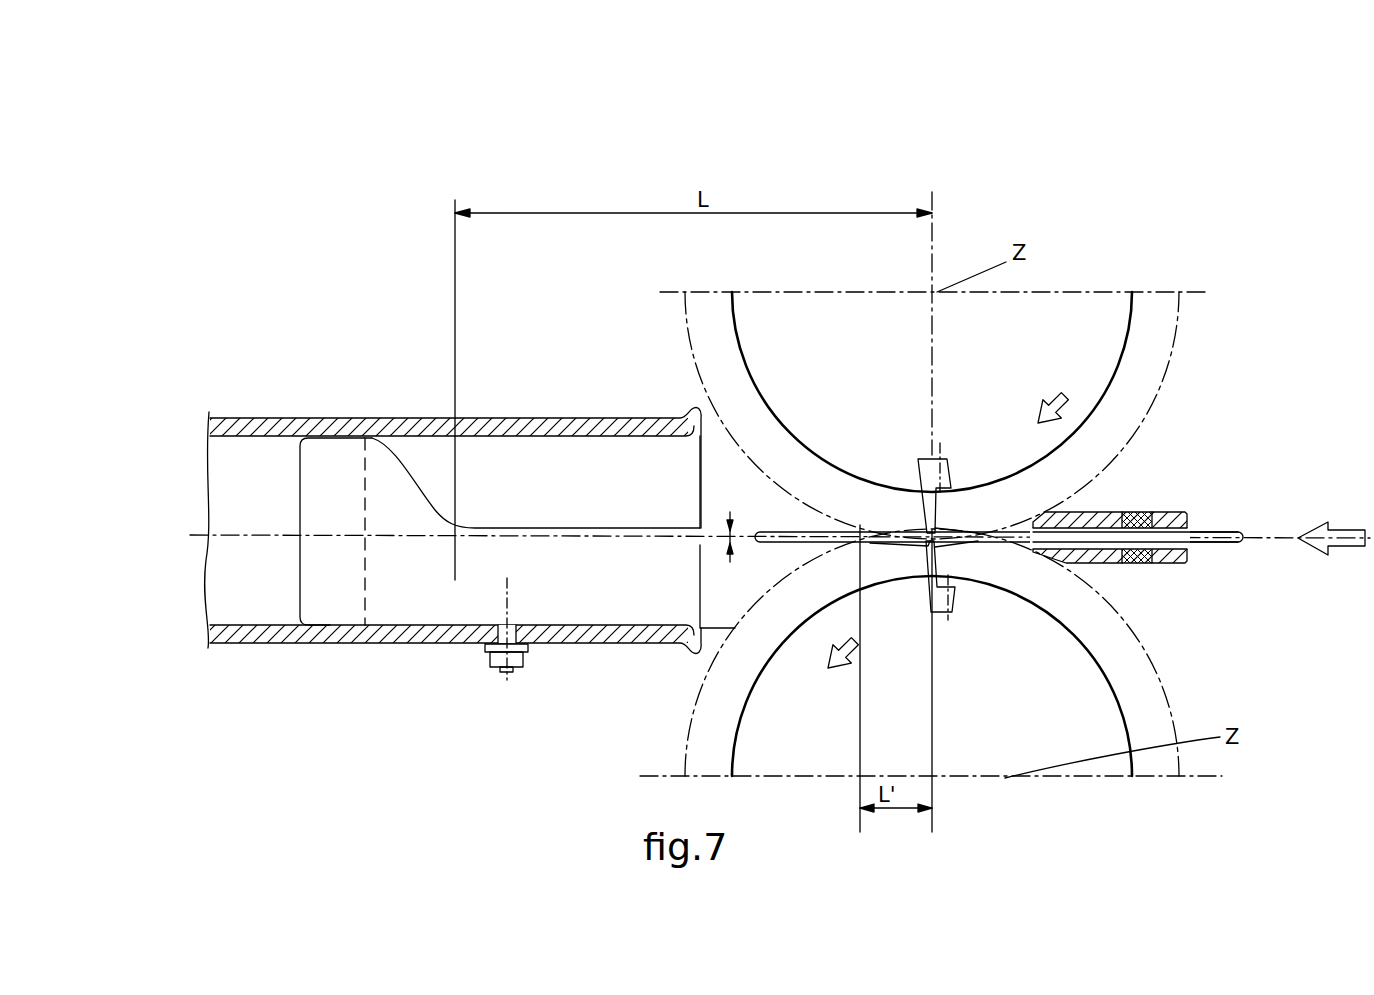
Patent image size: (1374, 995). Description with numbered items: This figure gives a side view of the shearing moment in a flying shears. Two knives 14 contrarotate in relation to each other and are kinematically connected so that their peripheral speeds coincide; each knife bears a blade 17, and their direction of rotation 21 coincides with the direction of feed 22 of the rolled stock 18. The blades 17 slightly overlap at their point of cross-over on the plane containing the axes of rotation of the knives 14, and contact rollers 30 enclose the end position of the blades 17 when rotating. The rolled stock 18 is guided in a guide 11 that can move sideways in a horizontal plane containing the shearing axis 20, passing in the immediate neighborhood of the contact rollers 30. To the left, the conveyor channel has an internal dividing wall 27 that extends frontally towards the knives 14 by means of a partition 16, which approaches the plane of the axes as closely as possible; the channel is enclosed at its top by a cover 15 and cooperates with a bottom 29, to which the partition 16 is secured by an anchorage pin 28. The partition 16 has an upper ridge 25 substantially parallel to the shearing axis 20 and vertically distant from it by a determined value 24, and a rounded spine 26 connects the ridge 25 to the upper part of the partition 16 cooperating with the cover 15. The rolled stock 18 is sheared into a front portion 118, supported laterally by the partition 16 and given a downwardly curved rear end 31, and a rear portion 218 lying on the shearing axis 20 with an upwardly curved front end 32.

The guide 11 is at (1100, 518).
The knives 14 is at (1100, 362).
The cover 15 is at (495, 430).
The partition 16 is at (597, 602).
The blades 17 is at (922, 468).
The rolled stock 18 is at (1228, 541).
The shearing axis 20 is at (430, 536).
The direction of rotation 21 is at (1050, 410).
The direction of feed 22 is at (1342, 540).
The determined value 24 is at (729, 540).
The upper ridge 25 is at (683, 524).
The rounded spine 26 is at (437, 496).
The internal dividing wall 27 is at (268, 597).
The anchorage pin 28 is at (503, 633).
The bottom 29 is at (373, 632).
The contact rollers 30 is at (1150, 412).
The downwardly curved rear end 31 is at (910, 558).
The upwardly curved front end 32 is at (970, 522).
The front portion 118 is at (830, 532).
The rear portion 218 is at (1002, 542).